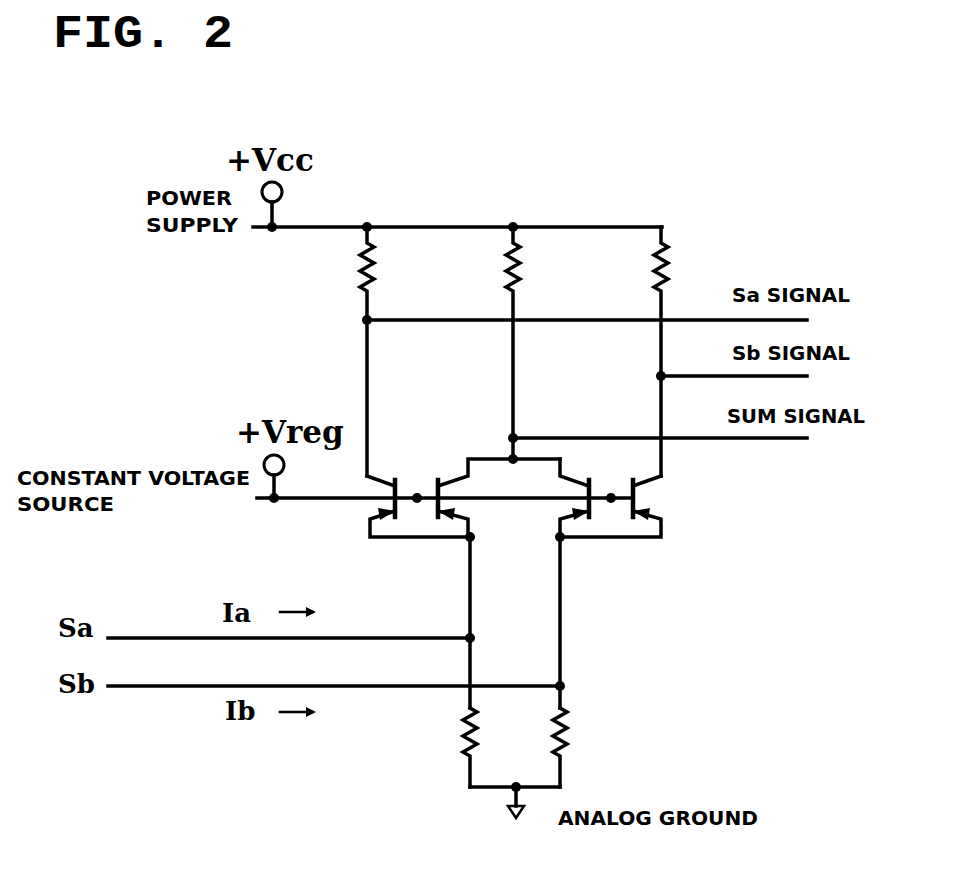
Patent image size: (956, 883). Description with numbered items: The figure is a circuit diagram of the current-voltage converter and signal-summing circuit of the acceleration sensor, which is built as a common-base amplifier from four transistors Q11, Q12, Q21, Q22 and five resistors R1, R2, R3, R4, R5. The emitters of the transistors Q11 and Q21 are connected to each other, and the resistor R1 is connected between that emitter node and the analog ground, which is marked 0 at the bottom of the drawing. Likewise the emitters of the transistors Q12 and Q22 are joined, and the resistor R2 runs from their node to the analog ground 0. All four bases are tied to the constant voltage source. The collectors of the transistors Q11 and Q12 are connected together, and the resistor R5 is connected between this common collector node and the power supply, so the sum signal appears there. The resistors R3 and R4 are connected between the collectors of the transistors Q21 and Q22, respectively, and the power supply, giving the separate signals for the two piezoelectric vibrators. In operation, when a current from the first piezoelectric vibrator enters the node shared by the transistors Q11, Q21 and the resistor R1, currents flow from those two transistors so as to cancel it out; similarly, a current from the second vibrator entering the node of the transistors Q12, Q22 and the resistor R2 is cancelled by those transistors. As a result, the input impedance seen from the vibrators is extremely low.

The resistor R1 is at (497, 747).
The resistor R2 is at (587, 747).
The resistor R3 is at (394, 273).
The resistor R4 is at (687, 351).
The resistor R5 is at (541, 343).
The transistor Q11 is at (452, 474).
The transistor Q12 is at (570, 472).
The transistor Q21 is at (389, 478).
The transistor Q22 is at (646, 475).
The analog ground 0 is at (526, 819).